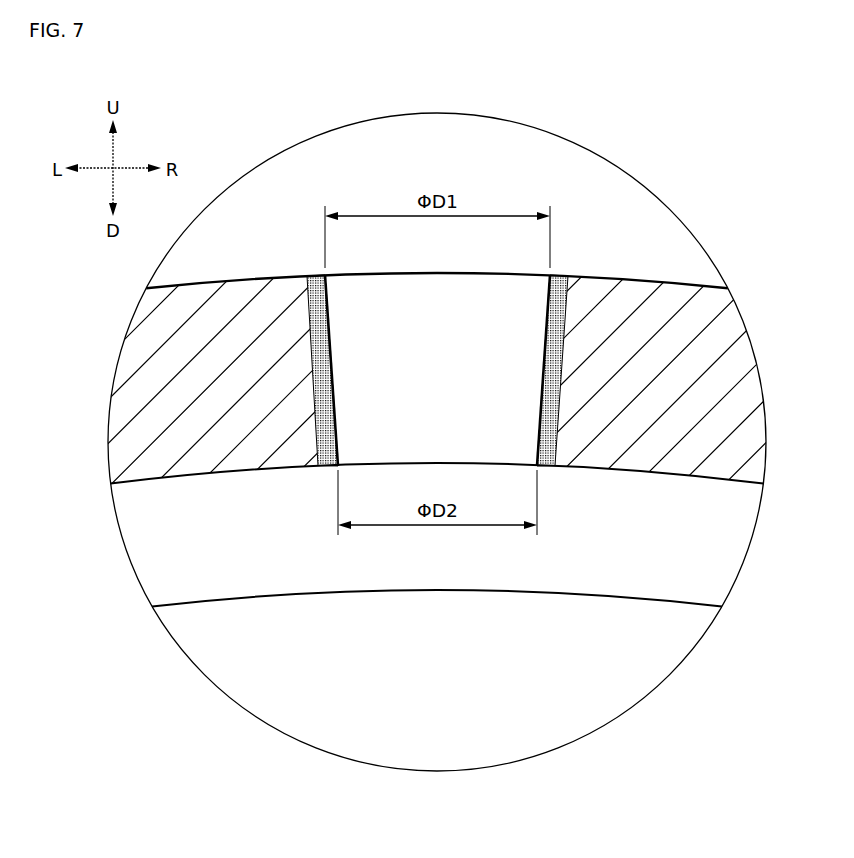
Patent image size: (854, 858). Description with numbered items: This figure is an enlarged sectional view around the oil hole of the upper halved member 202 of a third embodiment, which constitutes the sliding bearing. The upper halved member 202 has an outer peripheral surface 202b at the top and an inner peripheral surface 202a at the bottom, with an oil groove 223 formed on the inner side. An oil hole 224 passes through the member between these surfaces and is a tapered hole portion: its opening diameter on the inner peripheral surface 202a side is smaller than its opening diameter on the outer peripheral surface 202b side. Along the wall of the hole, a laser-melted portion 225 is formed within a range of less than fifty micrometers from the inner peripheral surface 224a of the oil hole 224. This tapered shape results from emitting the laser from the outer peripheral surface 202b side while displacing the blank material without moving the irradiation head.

The upper halved member 202 is at (644, 250).
The inner peripheral surface 202a is at (437, 594).
The outer peripheral surface 202b is at (253, 279).
The oil groove 223 is at (207, 474).
The oil hole 224 is at (459, 307).
The inner peripheral surface of the oil hole 224a is at (334, 354).
The laser-melted portion 225 is at (566, 315).